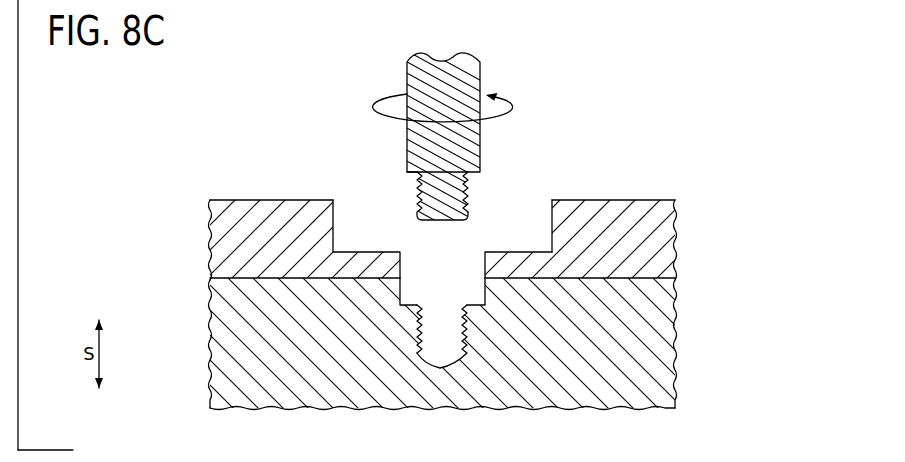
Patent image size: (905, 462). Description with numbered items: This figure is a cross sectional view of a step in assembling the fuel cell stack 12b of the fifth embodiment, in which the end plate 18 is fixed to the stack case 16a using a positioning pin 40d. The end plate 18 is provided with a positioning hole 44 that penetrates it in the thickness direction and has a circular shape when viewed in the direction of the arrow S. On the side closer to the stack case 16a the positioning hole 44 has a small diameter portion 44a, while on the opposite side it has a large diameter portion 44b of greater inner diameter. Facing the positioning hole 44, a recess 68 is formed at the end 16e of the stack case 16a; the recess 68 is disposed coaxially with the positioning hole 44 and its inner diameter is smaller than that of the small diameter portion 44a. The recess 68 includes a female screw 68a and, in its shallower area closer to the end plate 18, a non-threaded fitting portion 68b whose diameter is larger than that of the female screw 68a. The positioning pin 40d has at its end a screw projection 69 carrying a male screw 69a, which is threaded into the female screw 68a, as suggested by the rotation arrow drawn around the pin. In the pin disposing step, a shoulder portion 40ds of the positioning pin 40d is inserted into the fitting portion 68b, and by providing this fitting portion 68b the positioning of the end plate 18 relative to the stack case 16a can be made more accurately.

The positioning pin 40d is at (405, 57).
The shoulder portion 40ds is at (417, 173).
The screw projection 69 is at (432, 205).
The male screw 69a is at (467, 187).
The fuel cell stack 12b is at (252, 171).
The end plate 18 is at (611, 198).
The positioning hole 44 is at (345, 198).
The small diameter portion 44a is at (483, 262).
The large diameter portion 44b is at (552, 213).
The end of the stack case 16e is at (645, 338).
The stack case 16a is at (683, 368).
The recess 68 is at (473, 291).
The female screw 68a is at (432, 337).
The fitting portion 68b is at (405, 289).